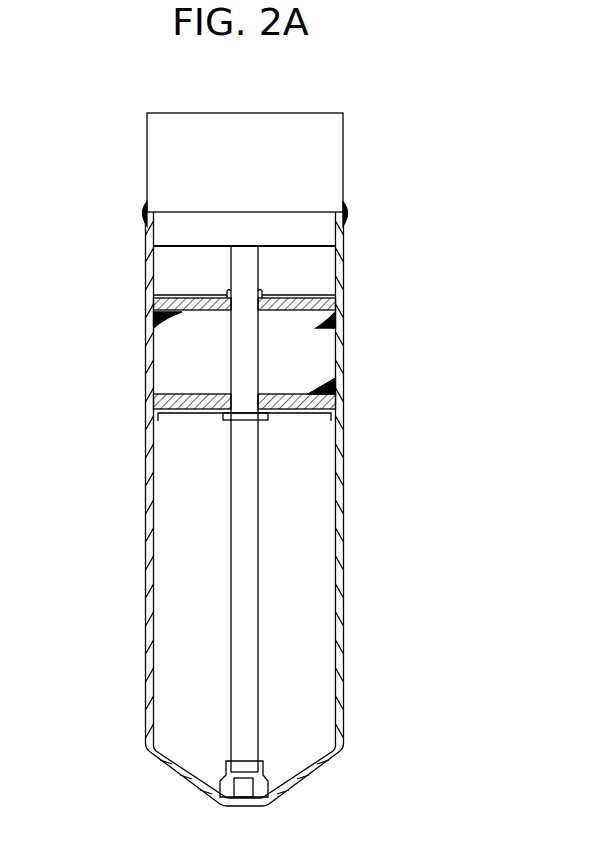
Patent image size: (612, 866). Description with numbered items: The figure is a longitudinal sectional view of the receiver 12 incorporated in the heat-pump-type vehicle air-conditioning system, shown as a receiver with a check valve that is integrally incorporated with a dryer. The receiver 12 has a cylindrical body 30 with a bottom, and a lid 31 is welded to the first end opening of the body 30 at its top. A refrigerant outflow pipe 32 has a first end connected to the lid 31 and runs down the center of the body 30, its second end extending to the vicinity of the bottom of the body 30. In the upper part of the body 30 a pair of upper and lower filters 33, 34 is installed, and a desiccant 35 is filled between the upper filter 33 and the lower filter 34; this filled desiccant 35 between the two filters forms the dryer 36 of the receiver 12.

The receiver 12 is at (368, 163).
The cylindrical body 30 is at (341, 615).
The lid 31 is at (160, 164).
The refrigerant outflow pipe 32 is at (236, 609).
The upper filter 33 is at (180, 297).
The lower filter 34 is at (190, 414).
The desiccant 35 is at (330, 384).
The dryer 36 is at (328, 322).